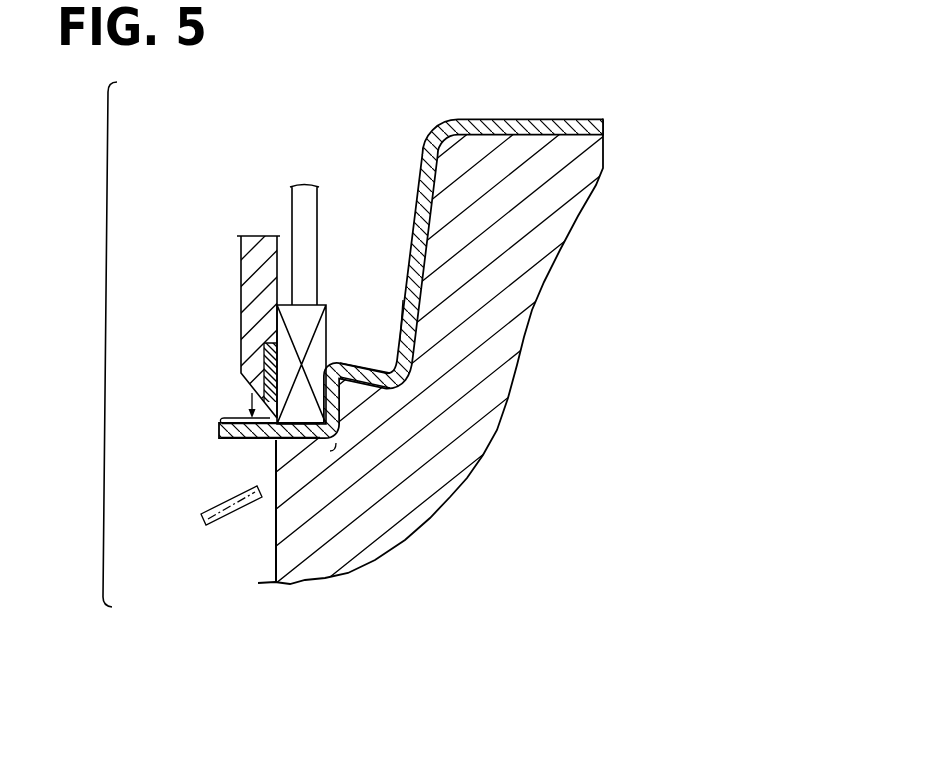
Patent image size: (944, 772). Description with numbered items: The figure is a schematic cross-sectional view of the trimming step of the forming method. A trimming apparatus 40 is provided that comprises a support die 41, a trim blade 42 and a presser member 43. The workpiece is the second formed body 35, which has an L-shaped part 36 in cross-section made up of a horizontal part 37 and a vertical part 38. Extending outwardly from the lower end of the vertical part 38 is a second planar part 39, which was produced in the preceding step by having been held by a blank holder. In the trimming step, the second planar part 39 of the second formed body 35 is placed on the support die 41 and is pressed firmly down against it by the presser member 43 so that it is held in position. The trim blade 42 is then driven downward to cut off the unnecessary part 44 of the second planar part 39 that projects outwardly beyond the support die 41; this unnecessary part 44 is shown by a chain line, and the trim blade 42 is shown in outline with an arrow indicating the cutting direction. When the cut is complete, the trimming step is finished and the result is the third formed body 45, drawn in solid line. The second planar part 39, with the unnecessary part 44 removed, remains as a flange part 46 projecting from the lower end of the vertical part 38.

The second formed body 35 is at (429, 257).
The third formed body 45 is at (567, 118).
The L-shaped part 36 is at (338, 408).
The horizontal part 37 is at (360, 361).
The vertical part 38 is at (373, 389).
The second planar part 39 is at (268, 418).
The trimming apparatus 40 is at (106, 342).
The support die 41 is at (380, 503).
The trim blade 42 is at (242, 297).
The presser member 43 is at (327, 327).
The unnecessary part 44 is at (227, 526).
The flange part 46 is at (280, 444).